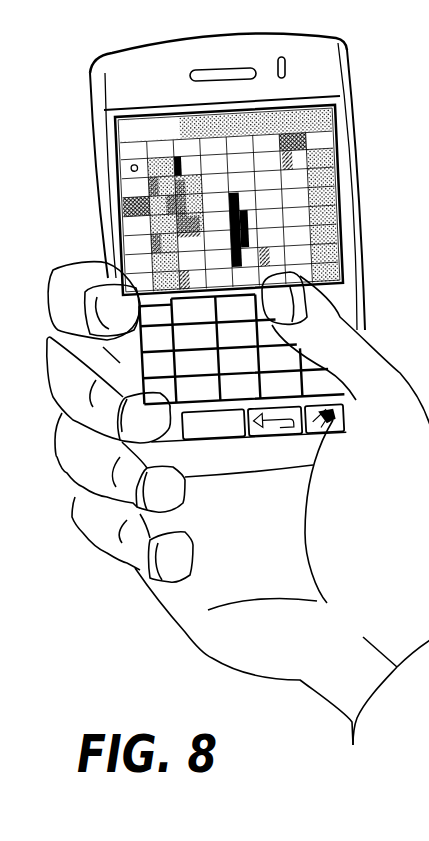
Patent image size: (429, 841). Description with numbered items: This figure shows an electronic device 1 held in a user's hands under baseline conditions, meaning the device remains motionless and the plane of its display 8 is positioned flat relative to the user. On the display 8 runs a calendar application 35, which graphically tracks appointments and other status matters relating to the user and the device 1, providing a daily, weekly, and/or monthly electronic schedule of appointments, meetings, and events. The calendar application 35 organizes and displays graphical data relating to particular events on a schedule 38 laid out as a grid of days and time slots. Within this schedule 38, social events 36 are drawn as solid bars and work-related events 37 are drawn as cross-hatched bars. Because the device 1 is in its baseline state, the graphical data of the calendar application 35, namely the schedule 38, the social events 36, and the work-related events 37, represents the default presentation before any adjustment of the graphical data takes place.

The electronic device 1 is at (373, 57).
The display 8 is at (330, 177).
The calendar application 35 is at (126, 181).
The social events 36 is at (168, 288).
The work-related events 37 is at (130, 292).
The schedule 38 is at (194, 128).